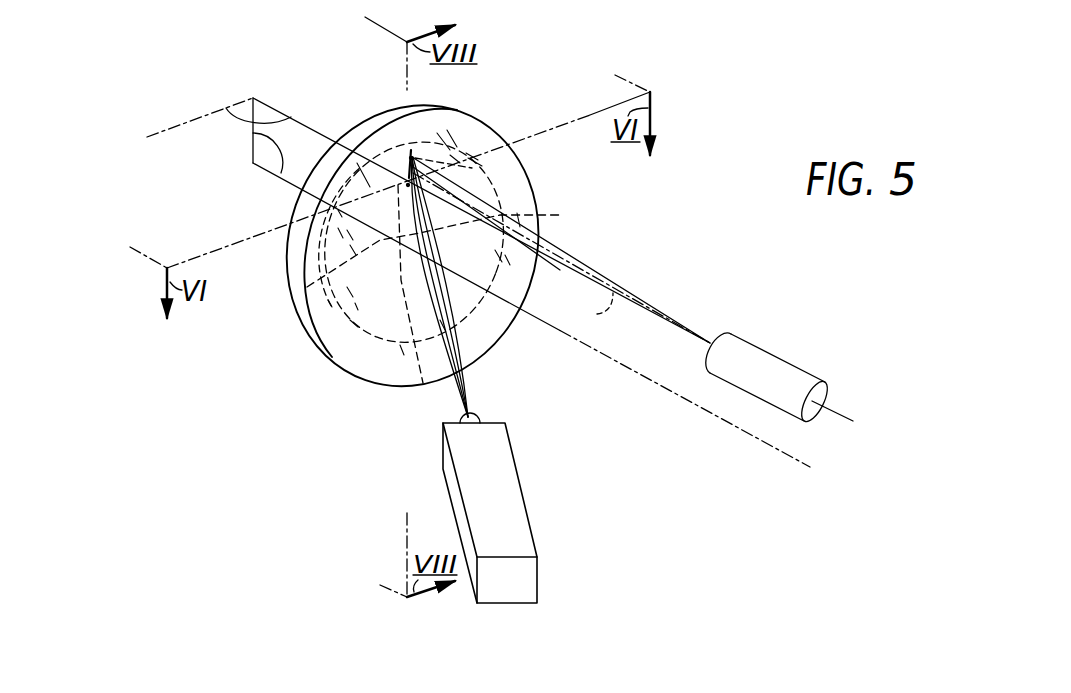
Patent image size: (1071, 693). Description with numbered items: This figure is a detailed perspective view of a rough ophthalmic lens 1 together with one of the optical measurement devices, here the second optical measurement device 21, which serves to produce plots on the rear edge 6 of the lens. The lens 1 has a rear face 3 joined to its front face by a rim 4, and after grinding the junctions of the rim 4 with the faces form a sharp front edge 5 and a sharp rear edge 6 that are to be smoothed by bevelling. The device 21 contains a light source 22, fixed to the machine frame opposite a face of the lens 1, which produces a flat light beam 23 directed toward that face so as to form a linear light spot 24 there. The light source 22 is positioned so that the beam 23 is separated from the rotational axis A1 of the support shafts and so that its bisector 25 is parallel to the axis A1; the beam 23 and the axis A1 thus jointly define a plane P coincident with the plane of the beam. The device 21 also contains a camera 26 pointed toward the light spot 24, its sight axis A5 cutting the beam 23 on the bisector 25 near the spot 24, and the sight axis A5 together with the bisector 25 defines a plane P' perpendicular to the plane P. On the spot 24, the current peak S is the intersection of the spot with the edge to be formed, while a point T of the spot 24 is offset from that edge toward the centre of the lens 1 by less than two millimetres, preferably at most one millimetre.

The ophthalmic lens 1 is at (485, 121).
The rear face 3 is at (345, 350).
The rim 4 is at (301, 216).
The front edge 5 is at (450, 157).
The rear edge 6 is at (472, 167).
The second optical measurement device 21 is at (666, 268).
The light source 22 is at (775, 367).
The flat light beam 23 is at (610, 282).
The linear light spot 24 is at (412, 157).
The bisector 25 is at (600, 312).
The camera 26 is at (450, 478).
The rotational axis A1 is at (796, 466).
The sight axis A5 is at (428, 290).
The plane P is at (255, 153).
The plane P' is at (258, 91).
The current peak S is at (410, 158).
The point T is at (410, 167).